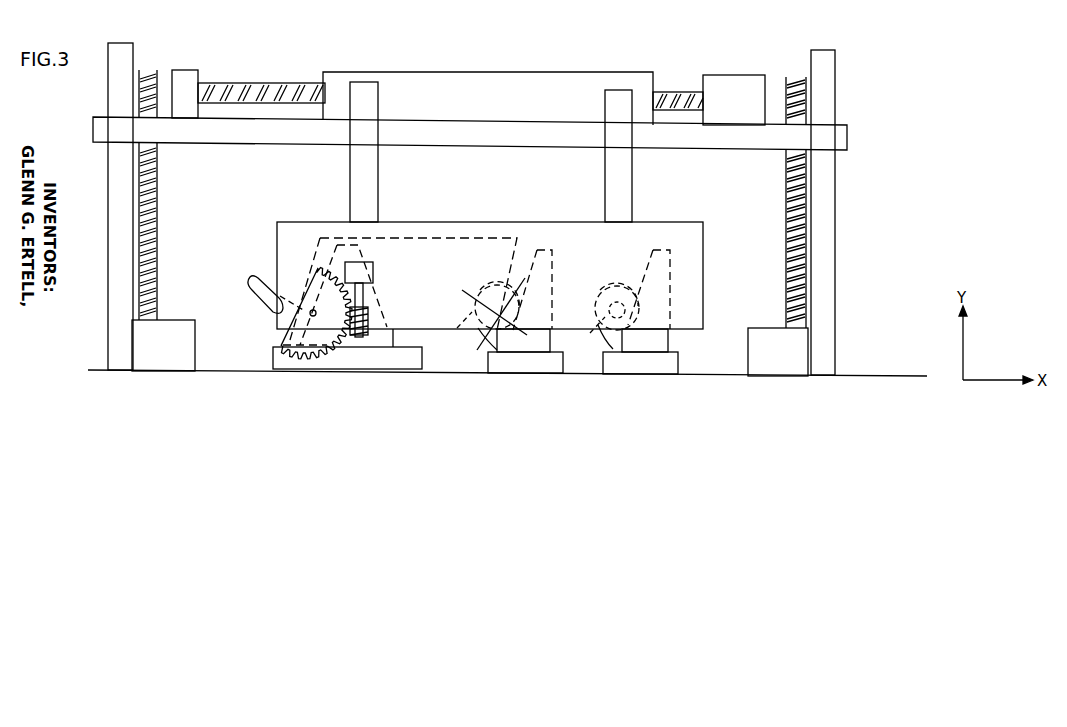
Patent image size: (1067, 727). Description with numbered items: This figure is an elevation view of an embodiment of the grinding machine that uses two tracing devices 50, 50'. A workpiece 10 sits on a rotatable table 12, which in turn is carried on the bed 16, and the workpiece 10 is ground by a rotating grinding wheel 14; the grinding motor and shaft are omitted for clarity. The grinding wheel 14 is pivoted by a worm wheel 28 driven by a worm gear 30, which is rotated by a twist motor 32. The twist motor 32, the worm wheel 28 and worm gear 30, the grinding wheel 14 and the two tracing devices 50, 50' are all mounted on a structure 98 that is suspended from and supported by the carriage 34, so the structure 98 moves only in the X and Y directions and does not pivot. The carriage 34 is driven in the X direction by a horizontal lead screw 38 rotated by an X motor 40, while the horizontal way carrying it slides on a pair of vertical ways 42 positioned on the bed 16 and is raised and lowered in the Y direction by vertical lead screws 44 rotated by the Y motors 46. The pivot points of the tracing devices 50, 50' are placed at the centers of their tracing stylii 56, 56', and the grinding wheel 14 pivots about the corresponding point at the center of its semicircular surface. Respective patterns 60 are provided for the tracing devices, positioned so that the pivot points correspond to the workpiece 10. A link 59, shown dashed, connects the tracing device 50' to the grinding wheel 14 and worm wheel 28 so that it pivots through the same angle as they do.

The workpiece 10 is at (397, 337).
The rotatable table 12 is at (387, 358).
The grinding wheel 14 is at (248, 283).
The bed 16 is at (478, 393).
The worm wheel 28 is at (287, 340).
The worm gear 30 is at (368, 323).
The twist motor 32 is at (374, 274).
The carriage 34 is at (455, 70).
The horizontal lead screw 38 is at (261, 81).
The X motor 40 is at (727, 73).
The vertical ways 42 is at (128, 43).
The vertical lead screws 44 is at (158, 190).
The Y motor 46 is at (195, 320).
The tracing device 50 is at (619, 283).
The tracing device 50' is at (481, 315).
The tracing stylus 56 is at (605, 314).
The tracing stylus 56' is at (492, 313).
The link 59 is at (440, 237).
The pattern 60 is at (552, 338).
The structure 98 is at (700, 224).